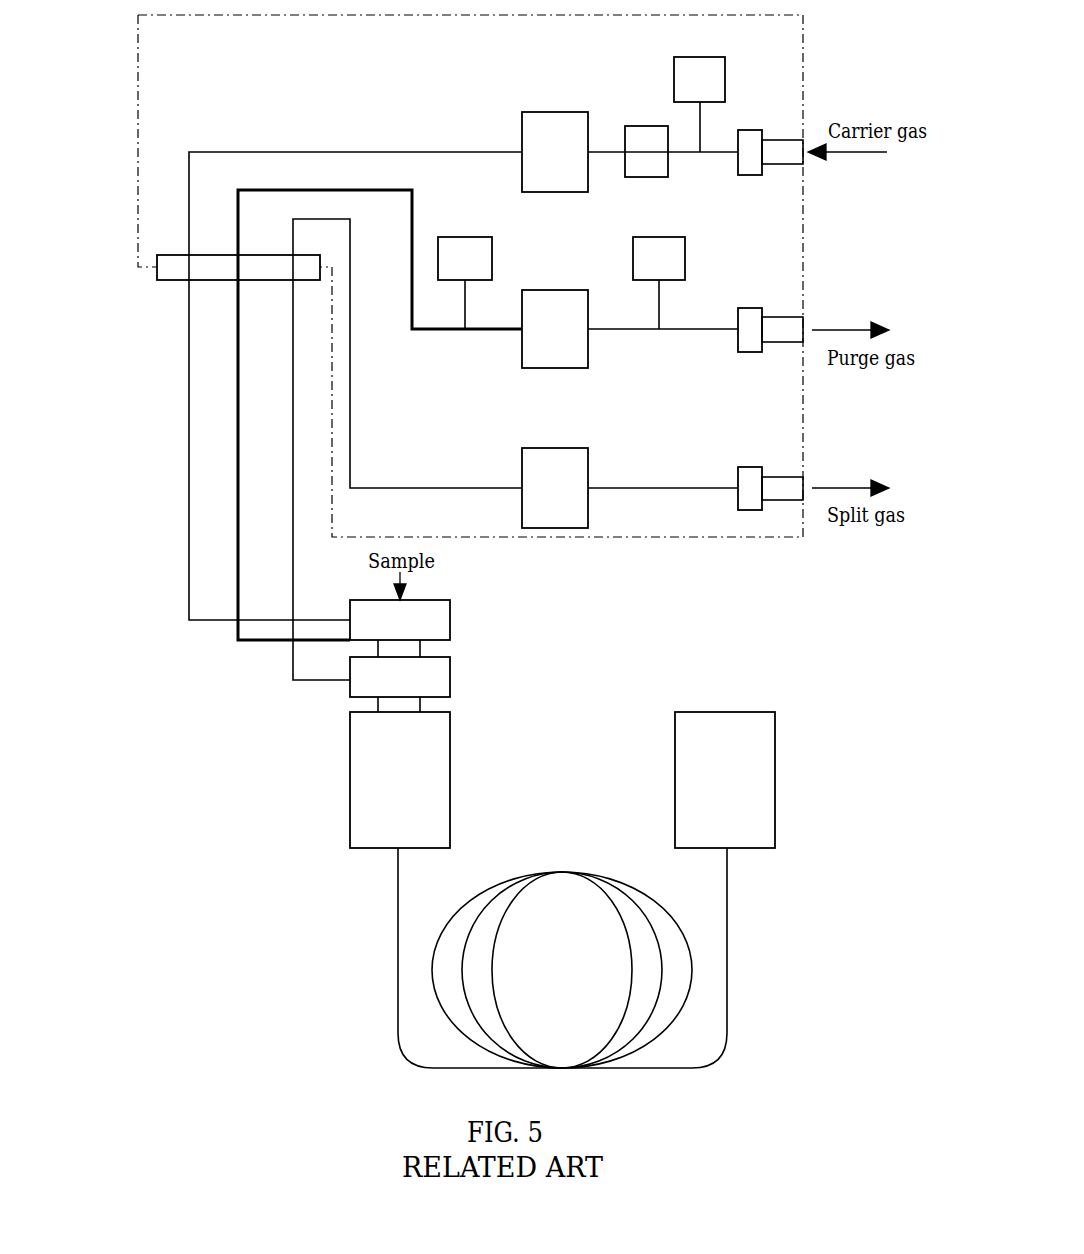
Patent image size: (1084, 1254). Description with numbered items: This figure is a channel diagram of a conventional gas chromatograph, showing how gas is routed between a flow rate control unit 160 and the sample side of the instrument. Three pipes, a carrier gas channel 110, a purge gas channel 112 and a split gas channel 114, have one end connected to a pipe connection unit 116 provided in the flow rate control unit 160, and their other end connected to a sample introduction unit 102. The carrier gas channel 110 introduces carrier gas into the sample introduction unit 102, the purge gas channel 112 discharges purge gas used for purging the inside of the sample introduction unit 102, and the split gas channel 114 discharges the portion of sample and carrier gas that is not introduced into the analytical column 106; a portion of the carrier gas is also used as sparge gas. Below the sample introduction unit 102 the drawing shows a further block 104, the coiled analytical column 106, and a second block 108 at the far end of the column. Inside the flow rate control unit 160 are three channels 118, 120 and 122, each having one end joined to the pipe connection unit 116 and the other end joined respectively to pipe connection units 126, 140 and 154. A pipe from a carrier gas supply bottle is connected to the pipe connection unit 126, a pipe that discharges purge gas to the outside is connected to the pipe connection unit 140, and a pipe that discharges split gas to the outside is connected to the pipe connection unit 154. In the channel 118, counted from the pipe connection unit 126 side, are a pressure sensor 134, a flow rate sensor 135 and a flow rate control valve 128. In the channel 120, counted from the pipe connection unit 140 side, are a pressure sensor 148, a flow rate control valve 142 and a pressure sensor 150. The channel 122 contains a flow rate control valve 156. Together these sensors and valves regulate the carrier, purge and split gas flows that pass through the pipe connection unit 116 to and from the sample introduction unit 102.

The sample introduction unit 102 is at (450, 600).
The oven / detector module 104 is at (452, 730).
The analytical column 106 is at (562, 872).
The detector 108 is at (775, 730).
The carrier gas channel 110 is at (189, 540).
The purge gas channel 112 is at (238, 513).
The split gas channel 114 is at (293, 490).
The pipe connection unit 116 is at (157, 255).
The channel 118 is at (189, 190).
The channel 120 is at (303, 190).
The channel 122 is at (352, 396).
The pipe connection unit 126 is at (782, 140).
The flow rate control valve 128 is at (556, 112).
The pressure sensor 134 is at (725, 78).
The flow rate sensor 135 is at (645, 126).
The pipe connection unit 140 is at (783, 317).
The flow rate control valve 142 is at (557, 290).
The pressure sensor 148 is at (687, 247).
The pressure sensor 150 is at (474, 237).
The pipe connection unit 154 is at (783, 477).
The flow rate control valve 156 is at (558, 448).
The flow rate control unit 160 is at (805, 41).